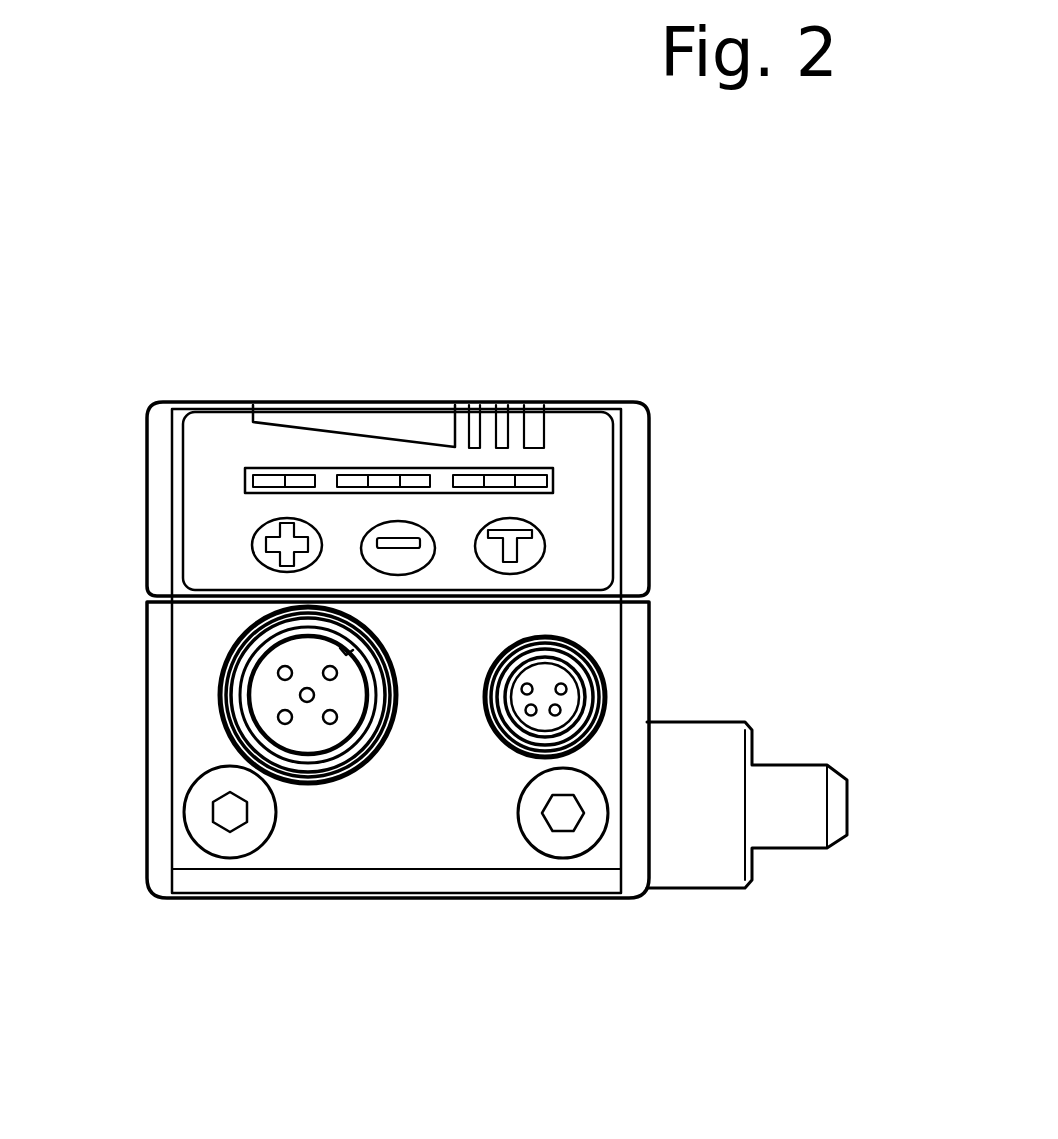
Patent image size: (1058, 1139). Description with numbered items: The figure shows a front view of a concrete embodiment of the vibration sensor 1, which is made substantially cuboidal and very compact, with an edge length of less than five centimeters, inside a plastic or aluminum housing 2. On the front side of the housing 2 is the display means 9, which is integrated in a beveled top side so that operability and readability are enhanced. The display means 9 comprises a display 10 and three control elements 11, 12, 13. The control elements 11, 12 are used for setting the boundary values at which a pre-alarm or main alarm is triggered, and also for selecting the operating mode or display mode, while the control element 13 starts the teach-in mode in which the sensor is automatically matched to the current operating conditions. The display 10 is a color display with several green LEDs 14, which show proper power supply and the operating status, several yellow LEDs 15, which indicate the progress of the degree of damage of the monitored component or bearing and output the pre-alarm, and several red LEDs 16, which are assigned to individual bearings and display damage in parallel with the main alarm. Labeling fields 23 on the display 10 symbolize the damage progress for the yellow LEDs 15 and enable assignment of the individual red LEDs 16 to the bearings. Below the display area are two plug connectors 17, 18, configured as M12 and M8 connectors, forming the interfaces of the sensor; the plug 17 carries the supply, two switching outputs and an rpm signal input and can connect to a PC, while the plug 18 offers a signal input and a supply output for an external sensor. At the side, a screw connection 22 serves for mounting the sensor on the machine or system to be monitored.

The vibration sensor 1 is at (658, 353).
The housing 2 is at (652, 528).
The display means 9 is at (218, 438).
The display 10 is at (560, 467).
The control element 11 is at (257, 525).
The control element 12 is at (383, 562).
The control element 13 is at (533, 553).
The green LEDs 14 is at (302, 480).
The yellow LEDs 15 is at (412, 480).
The red LEDs 16 is at (497, 478).
The plug connector 17 is at (342, 748).
The plug connector 18 is at (492, 733).
The screw connection 22 is at (785, 828).
The labeling fields 23 is at (450, 443).